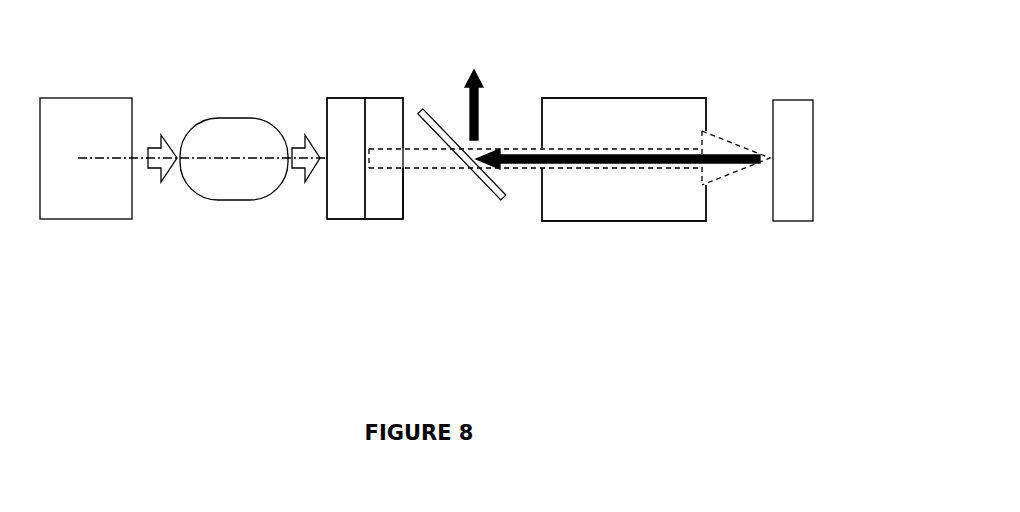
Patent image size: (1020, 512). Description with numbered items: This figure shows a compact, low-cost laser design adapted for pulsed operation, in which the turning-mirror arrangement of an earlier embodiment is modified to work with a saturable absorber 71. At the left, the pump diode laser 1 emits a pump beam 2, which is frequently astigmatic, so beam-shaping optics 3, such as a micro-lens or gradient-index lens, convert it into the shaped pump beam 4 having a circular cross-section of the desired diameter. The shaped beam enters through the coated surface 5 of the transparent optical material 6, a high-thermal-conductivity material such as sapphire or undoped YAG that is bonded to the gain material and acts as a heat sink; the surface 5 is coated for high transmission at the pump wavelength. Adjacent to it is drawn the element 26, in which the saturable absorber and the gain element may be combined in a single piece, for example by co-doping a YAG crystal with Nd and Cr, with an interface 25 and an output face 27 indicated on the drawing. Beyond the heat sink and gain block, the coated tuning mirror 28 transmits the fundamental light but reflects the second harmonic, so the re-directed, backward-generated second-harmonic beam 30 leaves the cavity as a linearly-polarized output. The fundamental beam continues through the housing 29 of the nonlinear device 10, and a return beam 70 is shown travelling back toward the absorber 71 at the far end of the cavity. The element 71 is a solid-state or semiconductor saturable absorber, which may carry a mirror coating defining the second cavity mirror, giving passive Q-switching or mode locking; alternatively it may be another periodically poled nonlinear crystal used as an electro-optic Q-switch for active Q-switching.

The pump diode laser 1 is at (88, 112).
The pump beam 2 is at (165, 163).
The beam-shaping optics 3 is at (248, 142).
The shaped pump beam 4 is at (308, 160).
The coated surface 5 is at (326, 110).
The transparent optical material 6 is at (345, 205).
The interface 25 is at (364, 120).
The single combined element 26 is at (390, 113).
The output face 27 is at (407, 210).
The coated tuning mirror 28 is at (418, 110).
The re-directed backward-generated second-harmonic beam 30 is at (482, 102).
The housing 29 is at (543, 202).
The device 10 is at (680, 207).
The return beam 70 is at (725, 172).
The saturable absorber 71 is at (783, 118).